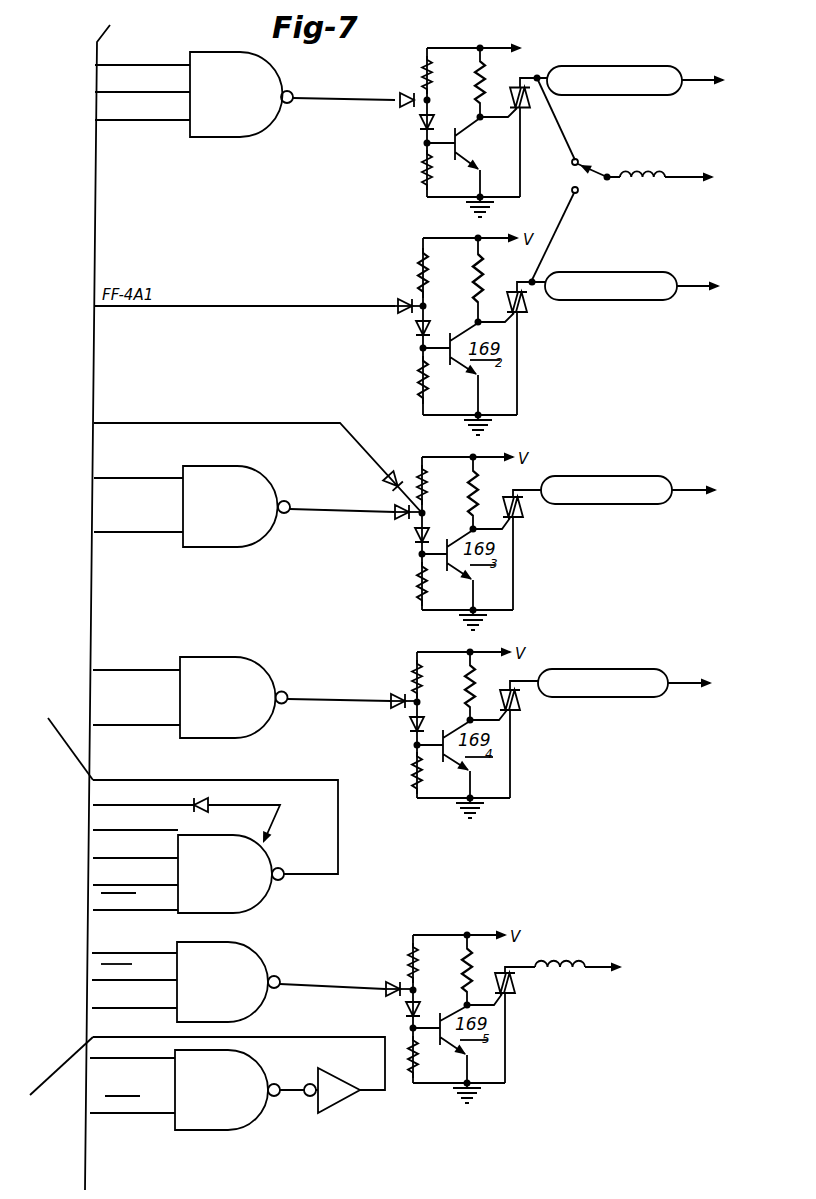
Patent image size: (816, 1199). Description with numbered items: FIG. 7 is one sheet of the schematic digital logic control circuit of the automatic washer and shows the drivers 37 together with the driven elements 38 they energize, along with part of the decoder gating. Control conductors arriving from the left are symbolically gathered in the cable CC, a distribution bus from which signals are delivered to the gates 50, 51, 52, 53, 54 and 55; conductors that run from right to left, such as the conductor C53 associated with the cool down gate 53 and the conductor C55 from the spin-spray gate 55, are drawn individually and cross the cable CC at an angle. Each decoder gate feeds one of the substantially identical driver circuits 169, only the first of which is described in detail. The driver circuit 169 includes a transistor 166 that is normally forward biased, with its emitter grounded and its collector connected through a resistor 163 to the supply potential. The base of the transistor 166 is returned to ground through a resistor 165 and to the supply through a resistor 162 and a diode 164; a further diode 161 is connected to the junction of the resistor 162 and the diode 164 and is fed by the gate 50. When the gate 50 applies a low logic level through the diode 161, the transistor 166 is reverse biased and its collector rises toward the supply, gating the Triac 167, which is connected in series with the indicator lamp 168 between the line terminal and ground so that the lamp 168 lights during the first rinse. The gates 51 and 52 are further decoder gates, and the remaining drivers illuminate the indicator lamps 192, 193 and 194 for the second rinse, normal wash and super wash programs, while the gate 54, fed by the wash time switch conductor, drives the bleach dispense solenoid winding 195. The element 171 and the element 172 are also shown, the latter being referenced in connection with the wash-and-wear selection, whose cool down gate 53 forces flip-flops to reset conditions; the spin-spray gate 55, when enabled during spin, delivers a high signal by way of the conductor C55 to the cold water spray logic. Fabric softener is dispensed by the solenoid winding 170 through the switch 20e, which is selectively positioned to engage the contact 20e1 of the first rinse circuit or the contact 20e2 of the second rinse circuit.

The gate 50 is at (245, 92).
The gate 51 is at (244, 503).
The gate 52 is at (242, 695).
The cool down gate 53 is at (215, 846).
The gate 54 is at (238, 979).
The spin-spray gate 55 is at (237, 1083).
The diode 161 is at (406, 93).
The resistor 162 is at (428, 78).
The resistor 163 is at (500, 82).
The diode 164 is at (418, 126).
The resistor 165 is at (424, 170).
The transistor 166 is at (469, 145).
The Triac 167 is at (528, 112).
The indicator lamp 168 is at (648, 64).
The driver circuit 169 is at (457, 129).
The solenoid winding 170 is at (650, 172).
The diode 171 is at (399, 470).
The contact 172 is at (208, 803).
The indicator lamp 192 is at (613, 300).
The indicator lamp 193 is at (641, 477).
The indicator lamp 194 is at (637, 670).
The bleach dispense solenoid winding 195 is at (560, 960).
The switch 20e is at (635, 179).
The contact 20e1 is at (578, 160).
The contact 20e2 is at (568, 233).
The drivers 37 is at (465, 1122).
The driven elements 38 is at (565, 1020).
The cable cc is at (95, 578).
The control conductor C53 is at (72, 752).
The control conductor C55 is at (50, 1078).